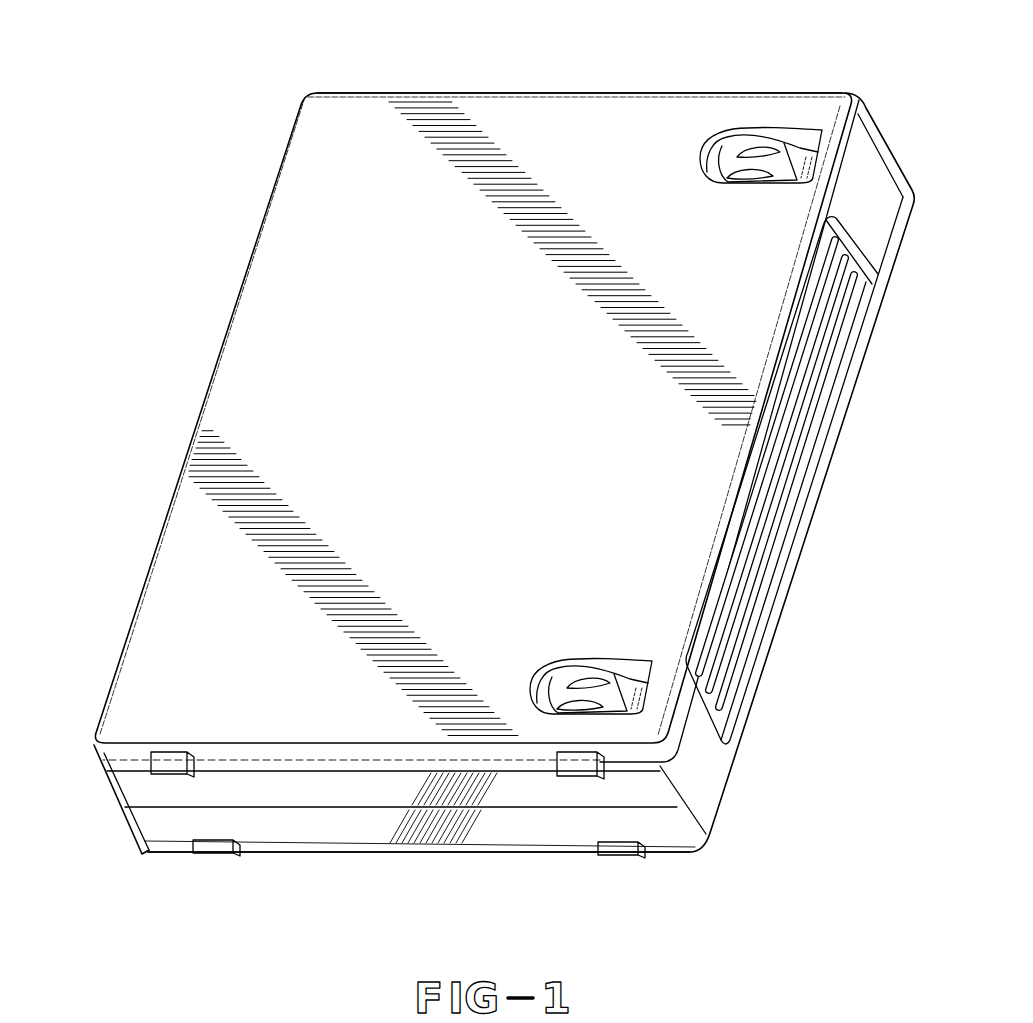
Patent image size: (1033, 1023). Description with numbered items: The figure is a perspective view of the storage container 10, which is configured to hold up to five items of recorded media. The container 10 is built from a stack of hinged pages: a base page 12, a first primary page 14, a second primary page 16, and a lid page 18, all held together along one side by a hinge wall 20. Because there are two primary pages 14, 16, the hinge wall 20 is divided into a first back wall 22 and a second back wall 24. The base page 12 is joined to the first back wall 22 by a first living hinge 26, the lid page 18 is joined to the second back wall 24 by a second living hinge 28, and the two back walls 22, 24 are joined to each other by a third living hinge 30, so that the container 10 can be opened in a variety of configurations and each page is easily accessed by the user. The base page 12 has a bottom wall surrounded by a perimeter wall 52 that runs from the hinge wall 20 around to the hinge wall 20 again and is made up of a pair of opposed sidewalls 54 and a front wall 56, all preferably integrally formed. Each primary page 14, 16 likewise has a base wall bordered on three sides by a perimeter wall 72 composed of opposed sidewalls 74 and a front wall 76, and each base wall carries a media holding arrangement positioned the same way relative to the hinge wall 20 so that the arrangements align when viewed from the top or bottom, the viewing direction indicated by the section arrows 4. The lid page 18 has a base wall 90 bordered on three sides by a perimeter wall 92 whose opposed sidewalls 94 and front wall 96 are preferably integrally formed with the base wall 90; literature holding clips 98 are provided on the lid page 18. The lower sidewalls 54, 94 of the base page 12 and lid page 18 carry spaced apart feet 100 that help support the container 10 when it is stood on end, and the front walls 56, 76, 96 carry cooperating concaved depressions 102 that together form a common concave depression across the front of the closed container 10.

The storage container 10 is at (252, 80).
The base page 12 is at (523, 857).
The first primary page 14 is at (470, 827).
The second primary page 16 is at (379, 804).
The lid page 18 is at (288, 280).
The hinge wall 20 is at (134, 849).
The first back wall 22 is at (130, 832).
The second back wall 24 is at (109, 781).
The first living hinge 26 is at (148, 858).
The second living hinge 28 is at (96, 757).
The third living hinge 30 is at (119, 805).
The perimeter wall 52 is at (281, 854).
The sidewalls 54 is at (330, 853).
The front wall 56 is at (720, 797).
The perimeter wall 72 is at (301, 812).
The sidewalls 74 is at (238, 822).
The front wall 76 is at (692, 733).
The base wall 90 is at (563, 130).
The perimeter wall 92 is at (683, 88).
The sidewalls 94 is at (625, 92).
The front wall 96 is at (865, 143).
The literature holding clips 98 is at (760, 165).
The feet 100 is at (175, 766).
The concaved depressions 102 is at (708, 598).
The section line 4- 4 is at (190, 452).